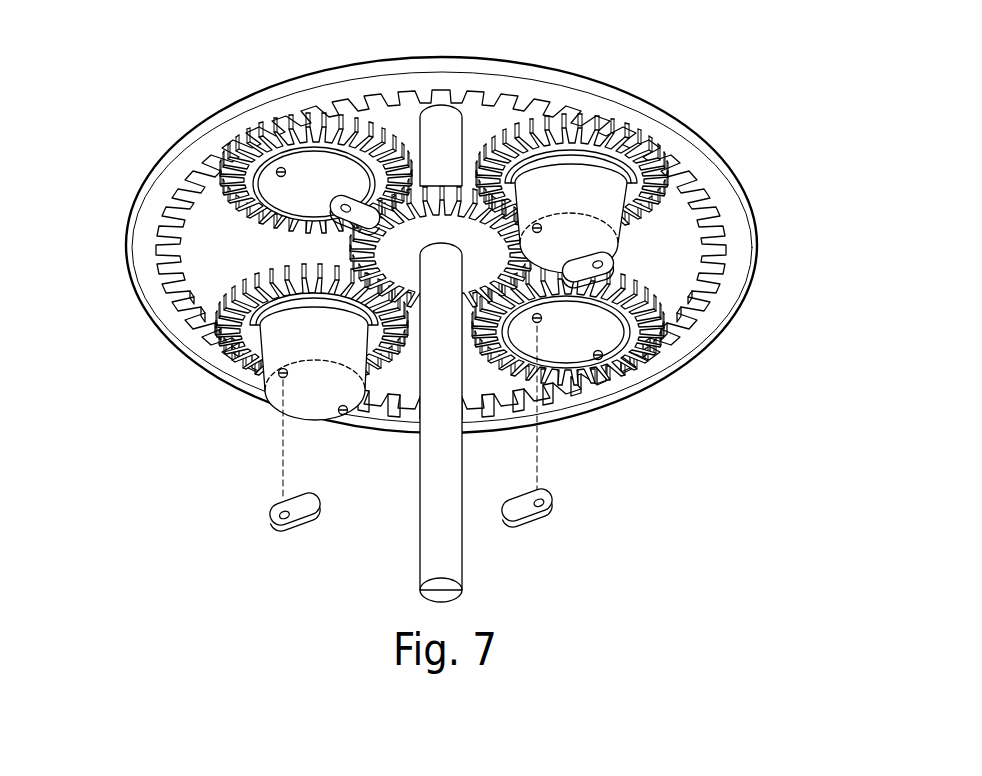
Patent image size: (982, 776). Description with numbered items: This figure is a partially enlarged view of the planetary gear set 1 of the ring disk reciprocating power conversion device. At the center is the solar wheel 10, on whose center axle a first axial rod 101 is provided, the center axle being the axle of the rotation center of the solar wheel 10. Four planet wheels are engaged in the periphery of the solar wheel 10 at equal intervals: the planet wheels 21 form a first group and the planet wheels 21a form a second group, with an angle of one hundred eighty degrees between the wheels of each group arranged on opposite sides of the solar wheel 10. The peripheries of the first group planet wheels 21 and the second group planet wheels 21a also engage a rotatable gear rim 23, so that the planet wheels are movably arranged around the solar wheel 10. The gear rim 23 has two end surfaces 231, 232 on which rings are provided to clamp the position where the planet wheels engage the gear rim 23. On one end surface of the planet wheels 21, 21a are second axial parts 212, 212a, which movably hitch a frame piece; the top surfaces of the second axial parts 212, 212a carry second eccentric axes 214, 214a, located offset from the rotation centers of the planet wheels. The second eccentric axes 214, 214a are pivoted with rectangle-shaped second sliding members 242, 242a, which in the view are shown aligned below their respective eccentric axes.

The planetary gear set 1 is at (411, 327).
The solar wheel 10 is at (377, 252).
The first axial rod 101 is at (430, 532).
The planet wheel 21 is at (633, 350).
The planet wheel 21a is at (612, 140).
The second axial part 212 is at (575, 357).
The second axial part 212a is at (278, 398).
The second eccentric axis 214 is at (539, 323).
The second eccentric axis 214a is at (279, 377).
The gear rim 23 is at (411, 245).
The end surface 231 is at (187, 130).
The end surface 232 is at (140, 262).
The second sliding member 242 is at (548, 521).
The second sliding member 242a is at (277, 524).